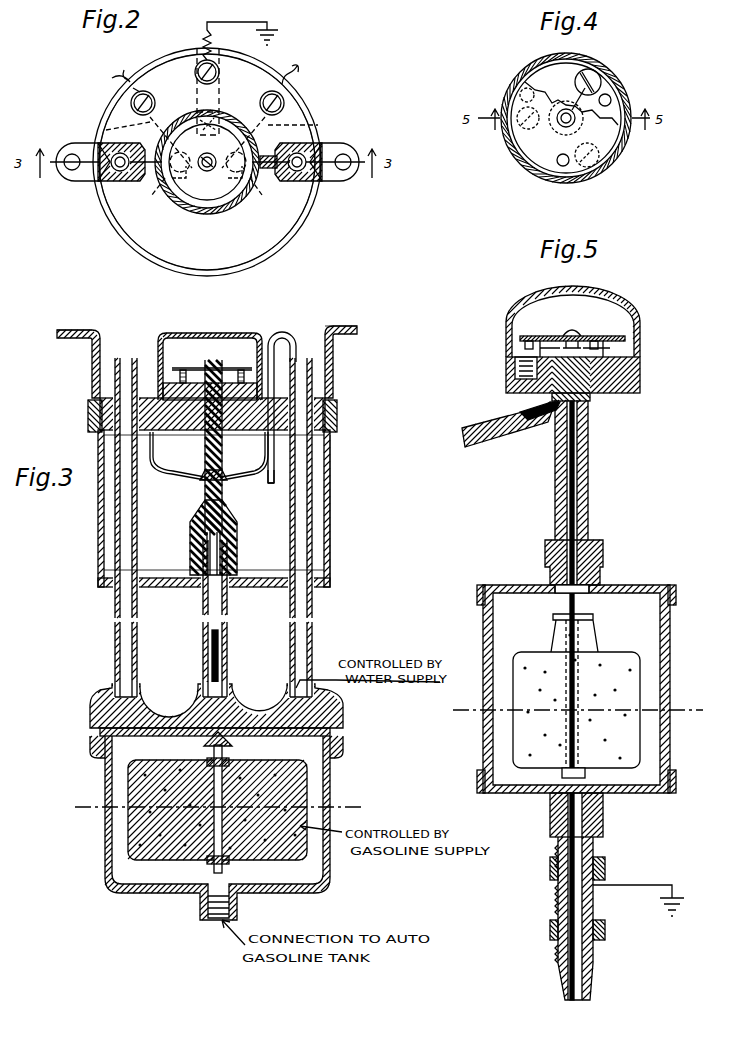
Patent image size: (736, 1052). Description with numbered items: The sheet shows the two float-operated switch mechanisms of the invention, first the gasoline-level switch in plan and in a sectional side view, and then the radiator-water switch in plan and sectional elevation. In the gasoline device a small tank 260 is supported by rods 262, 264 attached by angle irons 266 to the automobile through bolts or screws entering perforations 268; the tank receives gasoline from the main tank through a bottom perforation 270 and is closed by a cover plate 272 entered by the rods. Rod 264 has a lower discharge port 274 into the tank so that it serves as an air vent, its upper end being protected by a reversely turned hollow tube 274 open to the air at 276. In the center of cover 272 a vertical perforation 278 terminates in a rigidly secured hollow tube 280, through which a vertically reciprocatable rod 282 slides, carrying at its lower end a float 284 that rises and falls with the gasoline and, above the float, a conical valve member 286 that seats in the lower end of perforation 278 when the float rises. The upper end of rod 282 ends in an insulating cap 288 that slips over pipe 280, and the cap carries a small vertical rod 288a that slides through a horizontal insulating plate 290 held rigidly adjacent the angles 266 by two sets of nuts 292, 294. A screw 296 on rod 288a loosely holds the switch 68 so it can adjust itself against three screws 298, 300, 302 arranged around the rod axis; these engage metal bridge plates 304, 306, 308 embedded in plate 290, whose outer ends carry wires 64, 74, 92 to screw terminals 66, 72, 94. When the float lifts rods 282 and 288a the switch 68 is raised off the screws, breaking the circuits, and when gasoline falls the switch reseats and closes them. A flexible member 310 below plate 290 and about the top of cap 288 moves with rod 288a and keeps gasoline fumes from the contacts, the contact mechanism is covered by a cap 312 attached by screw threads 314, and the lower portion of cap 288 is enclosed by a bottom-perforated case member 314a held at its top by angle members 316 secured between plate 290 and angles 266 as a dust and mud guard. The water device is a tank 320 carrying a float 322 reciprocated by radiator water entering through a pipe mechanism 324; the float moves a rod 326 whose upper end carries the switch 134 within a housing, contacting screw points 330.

In FIG. 2, the wire 64 is at (108, 78).
In FIG. 2, the screw terminal 66 is at (146, 90).
In FIG. 2, the switch 68 is at (212, 182).
In FIG. 3, the switch 68 is at (226, 368).
In FIG. 2, the screw terminal 72 is at (220, 72).
In FIG. 2, the wire 74 is at (236, 20).
In FIG. 2, the wire 92 is at (300, 70).
In FIG. 2, the screw terminal 94 is at (285, 100).
In FIG. 4, the switch 134 is at (608, 137).
In FIG. 5, the switch 134 is at (600, 336).
In FIG. 3, the tank 260 is at (105, 795).
In FIG. 3, the rod 262 is at (115, 615).
In FIG. 3, the rod 264 is at (312, 608).
In FIG. 2, the angle iron 266 is at (80, 180).
In FIG. 3, the angle iron 266 is at (92, 360).
In FIG. 2, the perforation 268 is at (72, 176).
In FIG. 3, the perforation 268 is at (75, 330).
In FIG. 3, the bottom perforation 270 is at (200, 908).
In FIG. 3, the cover plate 272 is at (165, 700).
In FIG. 3, the discharge port / reversely turned hollow tube 274 is at (282, 332).
In FIG. 3, the opening 276 is at (271, 483).
In FIG. 3, the vertical perforation 278 is at (248, 702).
In FIG. 3, the hollow tube 280 is at (227, 605).
In FIG. 3, the vertically reciprocatable rod 282 is at (210, 635).
In FIG. 3, the float 284 is at (160, 770).
In FIG. 3, the conical valve member 286 is at (232, 746).
In FIG. 3, the cap 288 is at (190, 520).
In FIG. 3, the vertical rod 288a is at (222, 455).
In FIG. 2, the horizontal plate 290 is at (262, 235).
In FIG. 3, the horizontal plate 290 is at (148, 398).
In FIG. 3, the nuts 292 is at (324, 440).
In FIG. 3, the nuts 294 is at (330, 330).
In FIG. 2, the screw 296 is at (205, 172).
In FIG. 3, the screw 296 is at (208, 365).
In FIG. 2, the screw 298 is at (240, 192).
In FIG. 2, the screw 300 is at (172, 190).
In FIG. 2, the screw 302 is at (190, 105).
In FIG. 2, the metal bridge plate 304 is at (318, 125).
In FIG. 2, the metal bridge plate 306 is at (222, 88).
In FIG. 2, the metal bridge plate 308 is at (125, 130).
In FIG. 3, the flexible member 310 is at (165, 474).
In FIG. 2, the cap 312 is at (160, 188).
In FIG. 3, the cap 312 is at (218, 333).
In FIG. 3, the screw threads 314 is at (150, 380).
In FIG. 2, the case member 314a is at (318, 228).
In FIG. 3, the case member 314a is at (330, 520).
In FIG. 3, the angle member 316 is at (88, 416).
In FIG. 5, the water tank device 320 is at (670, 665).
In FIG. 5, the float 322 is at (530, 652).
In FIG. 5, the pipe mechanism 324 is at (582, 852).
In FIG. 5, the rod 326 is at (576, 452).
In FIG. 4, the screw points 330 is at (598, 83).
In FIG. 5, the screw points 330 is at (525, 345).